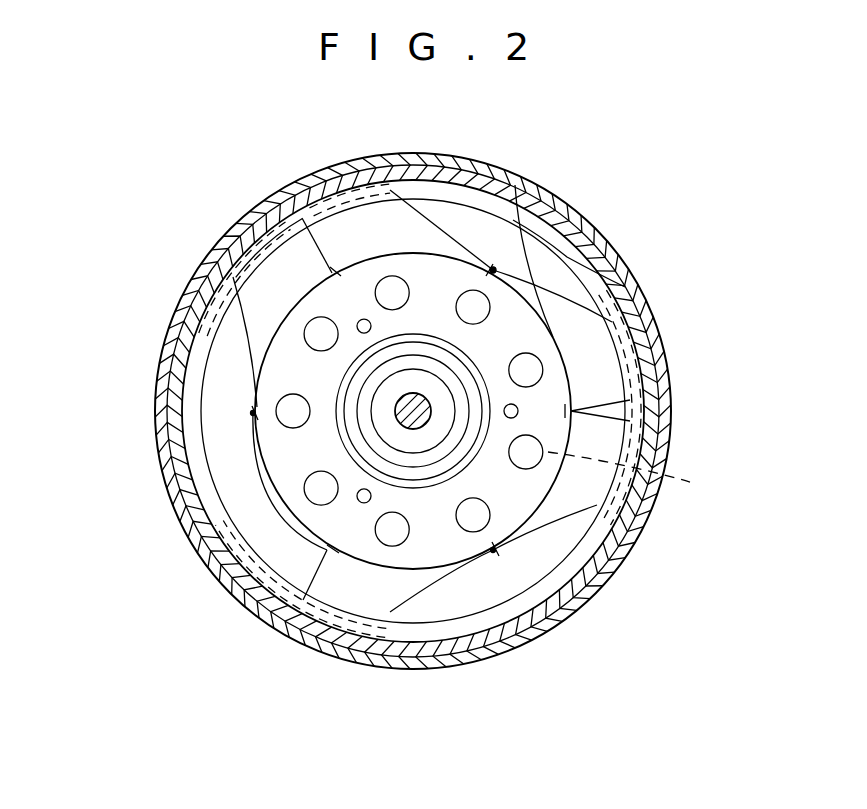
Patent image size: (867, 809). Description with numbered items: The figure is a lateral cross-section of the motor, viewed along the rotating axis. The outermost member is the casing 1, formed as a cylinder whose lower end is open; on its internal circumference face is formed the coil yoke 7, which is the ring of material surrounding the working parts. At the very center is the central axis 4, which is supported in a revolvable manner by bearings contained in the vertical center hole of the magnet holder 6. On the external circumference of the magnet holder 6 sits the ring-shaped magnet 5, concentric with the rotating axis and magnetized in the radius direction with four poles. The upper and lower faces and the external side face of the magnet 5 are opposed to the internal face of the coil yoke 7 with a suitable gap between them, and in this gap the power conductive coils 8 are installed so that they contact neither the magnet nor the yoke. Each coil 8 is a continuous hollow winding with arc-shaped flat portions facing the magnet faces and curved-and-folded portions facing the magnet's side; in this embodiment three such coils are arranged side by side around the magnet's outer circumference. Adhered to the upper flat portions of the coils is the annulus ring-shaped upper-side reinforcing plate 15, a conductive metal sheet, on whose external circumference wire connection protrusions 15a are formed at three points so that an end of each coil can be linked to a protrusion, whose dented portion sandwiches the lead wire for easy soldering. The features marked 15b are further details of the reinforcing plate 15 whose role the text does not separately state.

The casing 1 is at (672, 420).
The central axis 4 is at (431, 411).
The ring-shaped magnet 5 is at (494, 268).
The magnet holder 6 is at (690, 482).
The coil yoke 7 is at (660, 342).
The power conductive coil 8 is at (243, 326).
The upper-side reinforcing plate 15 is at (565, 262).
The wire connection protrusion 15a is at (518, 192).
The hole 15b is at (474, 532).